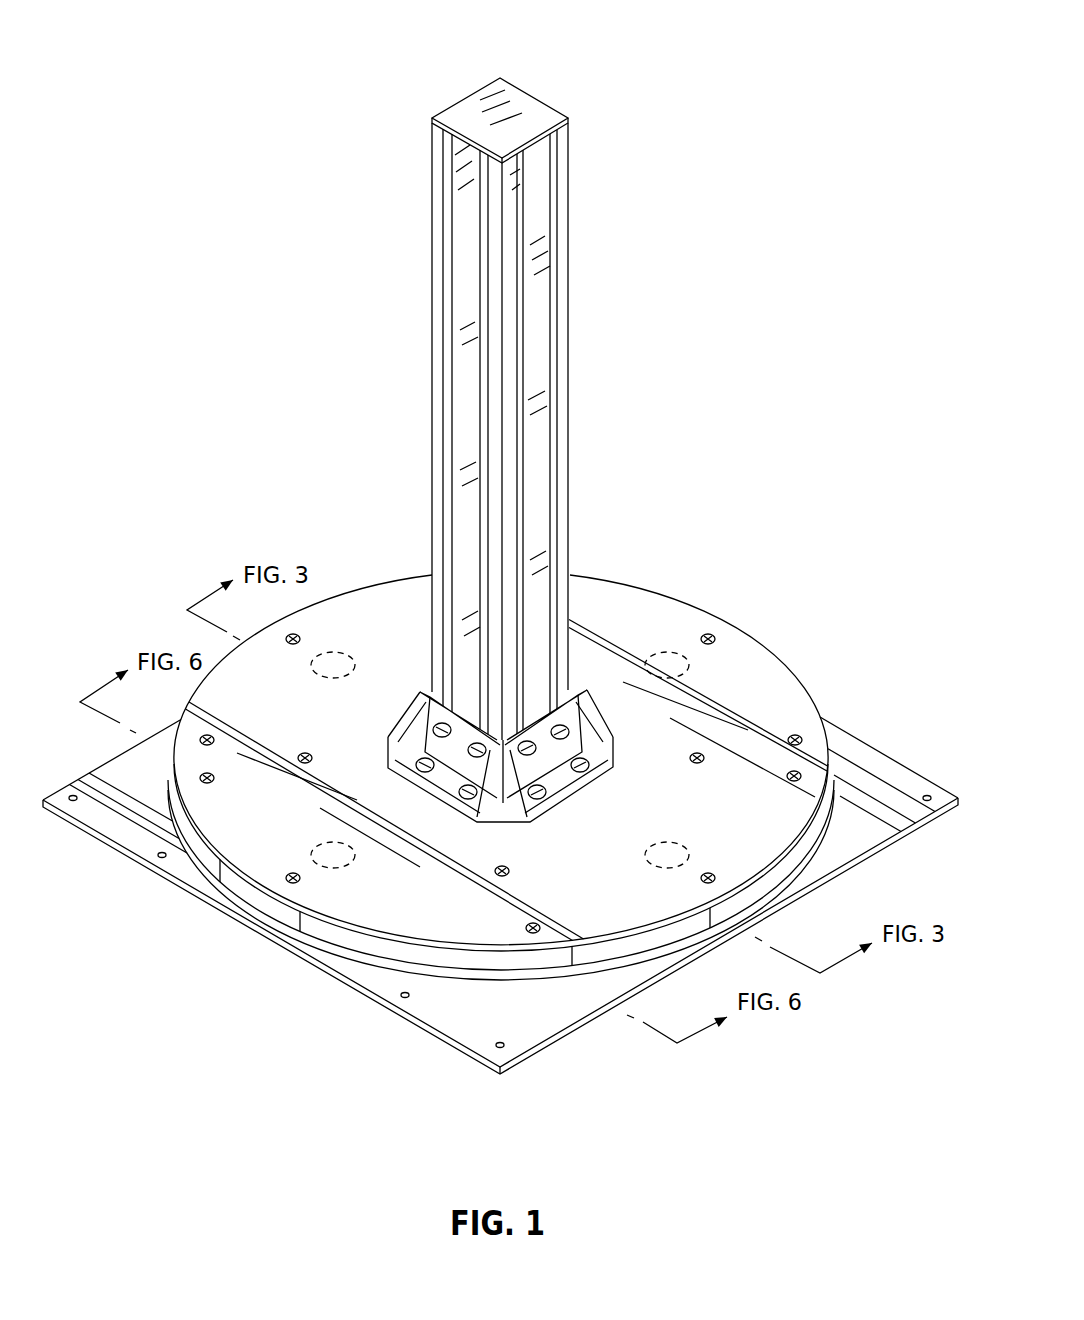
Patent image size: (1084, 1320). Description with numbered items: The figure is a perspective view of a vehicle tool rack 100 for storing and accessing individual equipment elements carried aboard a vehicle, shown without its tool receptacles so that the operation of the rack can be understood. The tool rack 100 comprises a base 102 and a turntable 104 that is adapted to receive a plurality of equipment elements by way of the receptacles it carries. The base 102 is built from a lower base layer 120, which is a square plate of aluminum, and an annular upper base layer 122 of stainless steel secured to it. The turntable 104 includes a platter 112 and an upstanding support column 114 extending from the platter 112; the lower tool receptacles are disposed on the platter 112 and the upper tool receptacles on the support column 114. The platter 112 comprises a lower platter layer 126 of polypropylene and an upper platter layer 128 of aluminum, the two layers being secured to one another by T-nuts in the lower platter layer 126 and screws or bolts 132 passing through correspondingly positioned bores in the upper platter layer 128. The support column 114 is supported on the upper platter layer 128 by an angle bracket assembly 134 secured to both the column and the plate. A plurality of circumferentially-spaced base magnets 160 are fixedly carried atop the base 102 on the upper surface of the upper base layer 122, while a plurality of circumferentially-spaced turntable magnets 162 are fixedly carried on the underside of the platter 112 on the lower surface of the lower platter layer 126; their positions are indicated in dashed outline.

The vehicle tool rack 100 is at (238, 110).
The base 102 is at (921, 760).
The turntable 104 is at (757, 633).
The platter 112 is at (830, 827).
The support column 114 is at (569, 343).
The lower base layer 120 is at (852, 743).
The upper base layer 122 is at (815, 862).
The lower platter layer 126 is at (523, 963).
The upper platter layer 128 is at (695, 617).
The screws or bolts 132 is at (305, 752).
The angle bracket assembly 134 is at (547, 790).
The base magnets 160 is at (348, 658).
The turntable magnets 162 is at (500, 760).